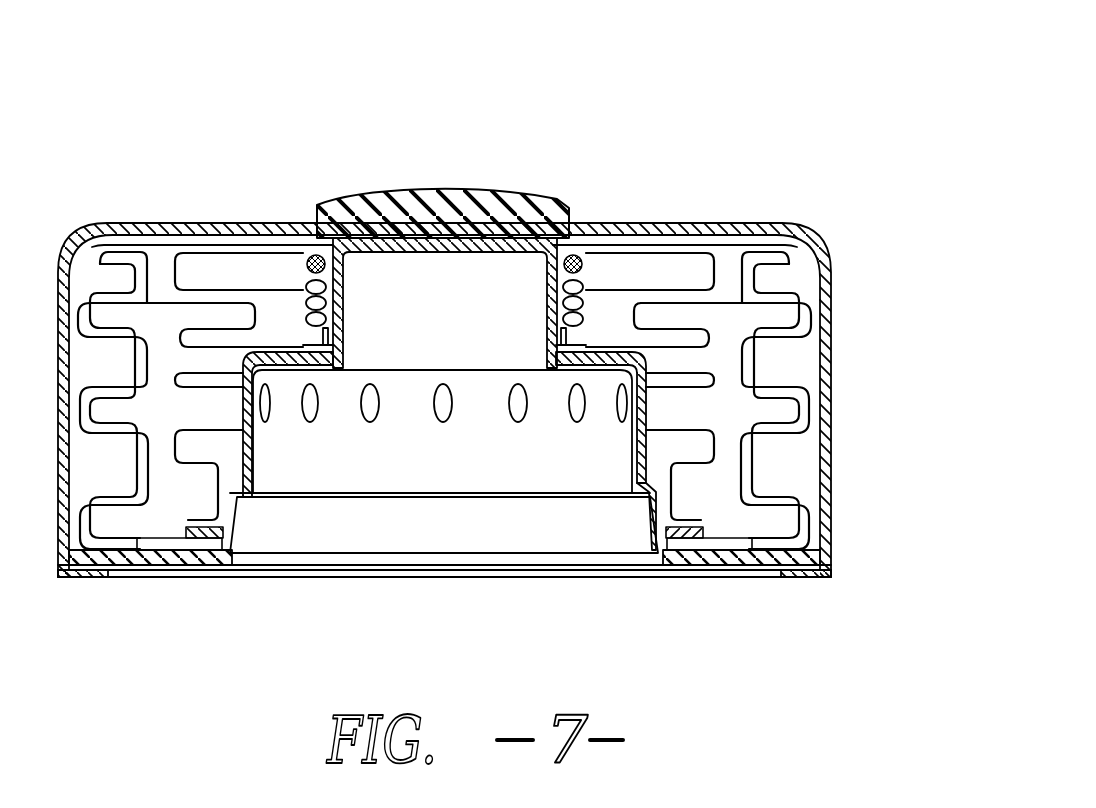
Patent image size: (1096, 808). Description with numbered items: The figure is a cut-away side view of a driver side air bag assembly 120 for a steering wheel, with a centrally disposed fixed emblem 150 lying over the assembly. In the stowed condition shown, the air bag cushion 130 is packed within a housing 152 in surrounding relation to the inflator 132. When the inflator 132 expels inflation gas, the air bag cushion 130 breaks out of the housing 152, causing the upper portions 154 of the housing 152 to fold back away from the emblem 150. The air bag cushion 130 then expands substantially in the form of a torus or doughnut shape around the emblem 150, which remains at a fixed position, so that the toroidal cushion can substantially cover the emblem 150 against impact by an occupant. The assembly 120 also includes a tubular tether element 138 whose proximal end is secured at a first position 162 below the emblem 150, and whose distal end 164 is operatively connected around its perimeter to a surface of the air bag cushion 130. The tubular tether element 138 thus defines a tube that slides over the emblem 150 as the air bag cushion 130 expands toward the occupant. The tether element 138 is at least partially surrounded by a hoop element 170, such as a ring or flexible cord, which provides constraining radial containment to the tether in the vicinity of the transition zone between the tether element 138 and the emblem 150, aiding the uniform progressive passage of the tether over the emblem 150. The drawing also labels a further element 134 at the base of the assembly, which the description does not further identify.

The air bag assembly 120 is at (727, 120).
The air bag cushion 130 is at (791, 297).
The inflator 132 is at (558, 473).
The base plate 134 is at (263, 572).
The tubular tether element 138 is at (588, 268).
The fixed emblem 150 is at (421, 187).
The housing 152 is at (831, 412).
The upper portions of the housing 154 is at (207, 228).
The first position 162 is at (323, 342).
The distal end 164 is at (311, 259).
The hoop element 170 is at (301, 246).